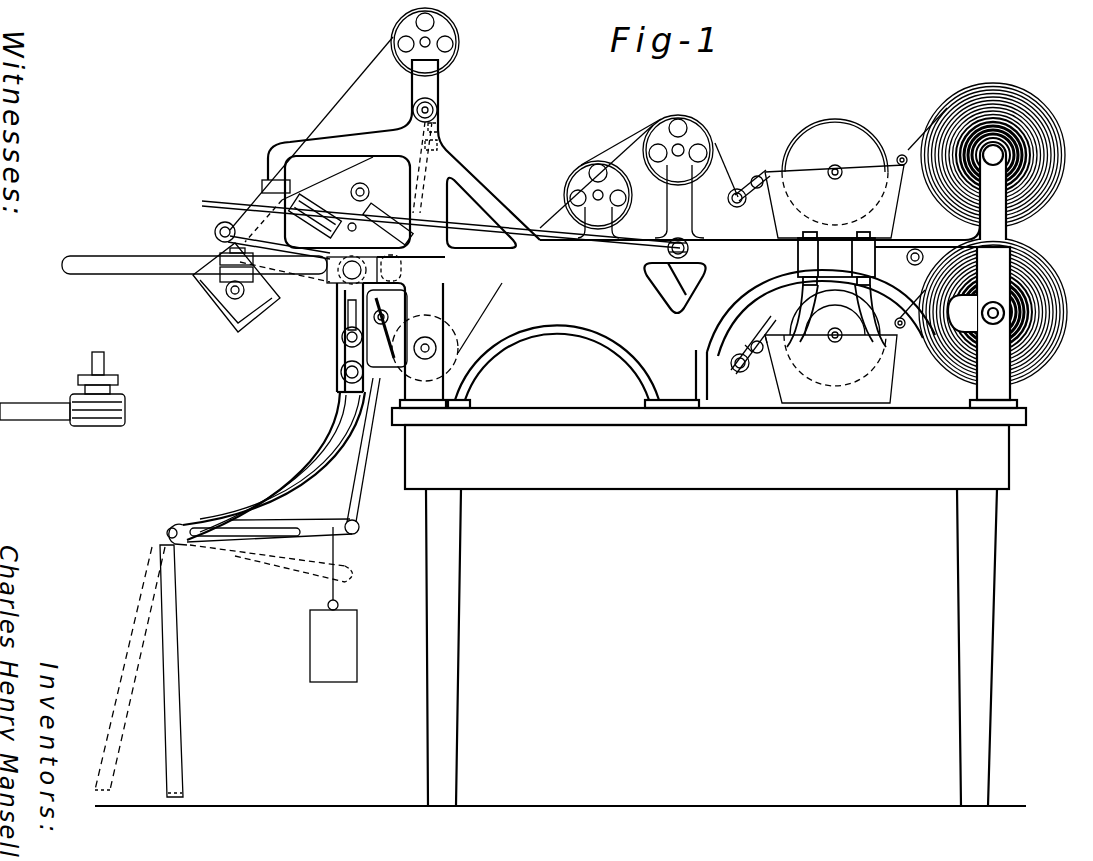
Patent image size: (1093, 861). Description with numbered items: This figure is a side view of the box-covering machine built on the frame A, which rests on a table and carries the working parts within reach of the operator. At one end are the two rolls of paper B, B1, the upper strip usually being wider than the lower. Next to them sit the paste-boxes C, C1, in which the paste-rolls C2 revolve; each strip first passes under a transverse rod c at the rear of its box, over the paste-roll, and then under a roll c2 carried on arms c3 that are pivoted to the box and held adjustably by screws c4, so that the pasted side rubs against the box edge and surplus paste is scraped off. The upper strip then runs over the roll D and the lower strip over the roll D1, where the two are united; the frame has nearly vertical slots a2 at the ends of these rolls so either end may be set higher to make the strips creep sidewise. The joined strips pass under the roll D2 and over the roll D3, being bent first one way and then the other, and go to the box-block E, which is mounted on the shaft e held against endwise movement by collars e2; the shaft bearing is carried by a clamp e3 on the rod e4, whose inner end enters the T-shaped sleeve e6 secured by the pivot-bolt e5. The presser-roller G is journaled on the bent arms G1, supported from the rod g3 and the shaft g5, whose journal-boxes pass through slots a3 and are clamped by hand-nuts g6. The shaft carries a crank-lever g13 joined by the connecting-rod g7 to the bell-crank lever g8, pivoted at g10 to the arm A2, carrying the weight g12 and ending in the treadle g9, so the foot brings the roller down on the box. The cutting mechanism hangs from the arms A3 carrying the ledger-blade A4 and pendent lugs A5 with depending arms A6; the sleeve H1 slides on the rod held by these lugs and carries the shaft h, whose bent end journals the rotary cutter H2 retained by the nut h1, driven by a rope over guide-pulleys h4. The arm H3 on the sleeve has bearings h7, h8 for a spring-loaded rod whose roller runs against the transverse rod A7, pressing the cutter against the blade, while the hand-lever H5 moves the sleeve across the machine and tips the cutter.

The frame A is at (624, 234).
The arm A2 is at (274, 466).
The arms A3 is at (300, 140).
The ledger-blade A4 is at (262, 185).
The pendent lugs A5 is at (356, 188).
The arms A6 is at (360, 235).
The transverse rod A7 is at (437, 110).
The roll of paper B is at (993, 142).
The roll of paper B1 is at (1002, 312).
The paste-box C is at (837, 201).
The paste-box C1 is at (878, 298).
The paste-rolls C2 is at (835, 172).
The transverse rod c is at (902, 151).
The roll c2 is at (739, 207).
The arms c3 is at (756, 176).
The screws c4 is at (753, 191).
The roll D is at (682, 176).
The roll D1 is at (600, 193).
The roll D2 is at (458, 358).
The roll D3 is at (438, 42).
The box-block E is at (262, 343).
The shaft e is at (236, 288).
The collars e2 is at (245, 290).
The clamp e3 is at (222, 257).
The rod e4 is at (194, 253).
The pivot-bolt e5 is at (338, 260).
The T-shaped sleeve e6 is at (115, 426).
The presser-roller G is at (215, 229).
The bent frame or arms G1 is at (279, 247).
The rod g3 is at (402, 270).
The shaft g5 is at (347, 322).
The hand-nuts g6 is at (342, 337).
The connecting-rod g7 is at (363, 450).
The bell-crank lever g8 is at (335, 522).
The treadle g9 is at (149, 671).
The pivot g10 is at (172, 527).
The weight g12 is at (333, 604).
The crank-lever g13 is at (387, 328).
The sleeve H1 is at (383, 199).
The rotary cutter H2 is at (445, 224).
The arm H3 is at (421, 242).
The hand-lever H5 is at (462, 219).
The shaft h is at (309, 199).
The nut h1 is at (285, 258).
The guide-pulleys h4 is at (402, 139).
The bearing h7 is at (431, 167).
The bearing h8 is at (432, 184).
The slots a2 is at (596, 194).
The slots a3 is at (341, 368).